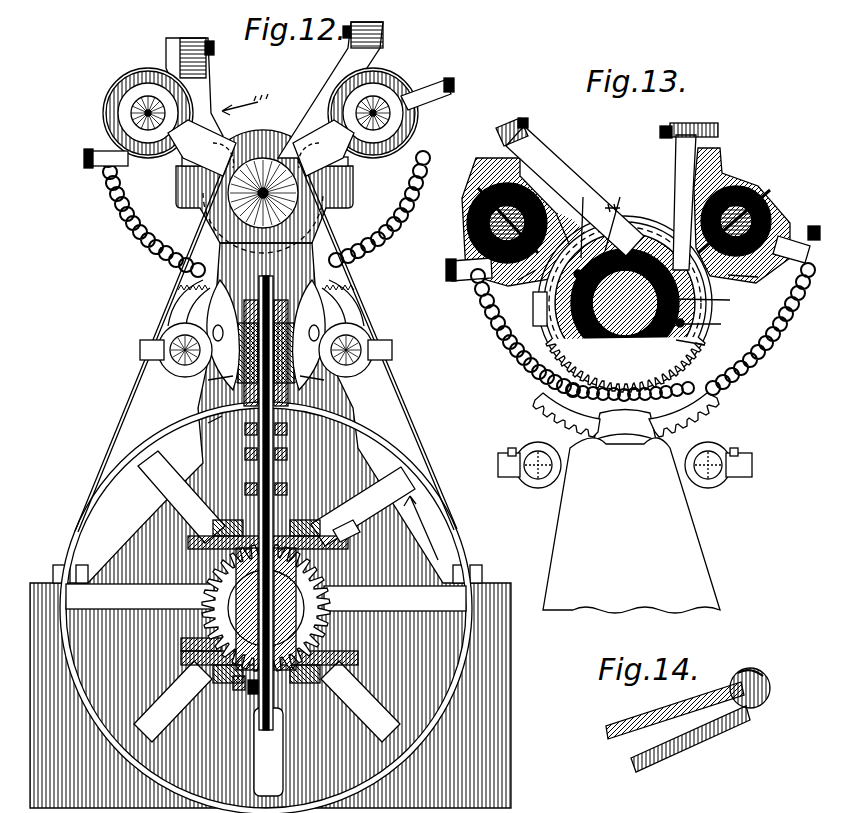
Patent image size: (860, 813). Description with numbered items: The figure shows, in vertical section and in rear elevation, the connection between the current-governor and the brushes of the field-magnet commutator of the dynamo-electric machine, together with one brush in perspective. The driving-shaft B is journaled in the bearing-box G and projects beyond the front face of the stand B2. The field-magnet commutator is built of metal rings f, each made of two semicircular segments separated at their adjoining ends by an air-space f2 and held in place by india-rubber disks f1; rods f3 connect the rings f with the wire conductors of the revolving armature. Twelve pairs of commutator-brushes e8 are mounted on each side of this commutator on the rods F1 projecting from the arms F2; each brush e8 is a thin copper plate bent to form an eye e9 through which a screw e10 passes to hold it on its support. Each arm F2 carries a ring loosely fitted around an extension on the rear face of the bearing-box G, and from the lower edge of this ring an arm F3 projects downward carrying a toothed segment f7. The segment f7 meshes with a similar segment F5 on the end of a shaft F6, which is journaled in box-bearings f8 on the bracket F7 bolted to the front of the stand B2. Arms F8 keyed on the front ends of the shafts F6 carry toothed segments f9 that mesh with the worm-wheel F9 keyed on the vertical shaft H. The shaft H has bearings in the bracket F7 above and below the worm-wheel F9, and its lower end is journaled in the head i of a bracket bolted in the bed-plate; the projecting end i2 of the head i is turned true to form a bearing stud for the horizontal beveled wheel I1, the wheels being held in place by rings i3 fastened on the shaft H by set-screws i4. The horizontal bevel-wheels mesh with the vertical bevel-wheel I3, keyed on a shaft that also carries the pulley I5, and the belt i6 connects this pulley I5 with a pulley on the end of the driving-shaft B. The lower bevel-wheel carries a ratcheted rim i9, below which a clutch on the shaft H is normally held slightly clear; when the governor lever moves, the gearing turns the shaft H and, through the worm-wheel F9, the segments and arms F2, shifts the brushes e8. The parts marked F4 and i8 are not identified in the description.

In FIG. 12, the driving-shaft B is at (264, 185).
In FIG. 13, the driving-shaft B is at (625, 303).
In FIG. 12, the stand B2 is at (270, 528).
In FIG. 13, the stand B2 is at (631, 525).
In FIG. 12, the bearing-box G is at (190, 173).
In FIG. 13, the bearing-box G is at (532, 296).
In FIG. 12, the vertical shaft H is at (260, 730).
In FIG. 12, the head of the bracket i is at (320, 175).
In FIG. 12, the projecting end of the head i2 is at (253, 678).
In FIG. 12, the rings i3 is at (240, 515).
In FIG. 12, the set-screws i4 is at (287, 515).
In FIG. 12, the belt i6 is at (114, 403).
In FIG. 12, the spoke clamp i8 is at (330, 518).
In FIG. 12, the ratcheted rim i9 is at (227, 676).
In FIG. 12, the beveled wheel I1 is at (168, 533).
In FIG. 12, the vertical bevel-wheel I3 is at (320, 593).
In FIG. 12, the pulley I5 is at (402, 468).
In FIG. 12, the rods F1 is at (227, 147).
In FIG. 13, the rods F1 is at (468, 216).
In FIG. 12, the arms F2 is at (260, 145).
In FIG. 13, the arms F2 is at (632, 278).
In FIG. 12, the arm F3 is at (299, 343).
In FIG. 12, the toothed rack F4 is at (232, 343).
In FIG. 13, the toothed rack F4 is at (530, 369).
In FIG. 12, the toothed segment F5 is at (195, 281).
In FIG. 13, the toothed segment F5 is at (690, 404).
In FIG. 12, the shaft F6 is at (176, 345).
In FIG. 13, the shaft F6 is at (529, 469).
In FIG. 12, the bracket F7 is at (140, 349).
In FIG. 13, the bracket F7 is at (502, 464).
In FIG. 12, the arms F8 is at (155, 340).
In FIG. 12, the worm-wheel F9 is at (202, 417).
In FIG. 13, the metal rings f is at (703, 318).
In FIG. 13, the india-rubber disks f1 is at (703, 294).
In FIG. 12, the air-space f2 is at (180, 644).
In FIG. 13, the air-space f2 is at (738, 360).
In FIG. 13, the rods f3 is at (576, 252).
In FIG. 12, the toothed segment f7 is at (200, 267).
In FIG. 13, the toothed segment f7 is at (600, 406).
In FIG. 13, the box-bearings f8 is at (502, 446).
In FIG. 12, the toothed segments f9 is at (216, 373).
In FIG. 12, the commutator-brushes e8 is at (196, 94).
In FIG. 13, the commutator-brushes e8 is at (532, 166).
In FIG. 14, the commutator-brushes e8 is at (680, 694).
In FIG. 12, the eye e9 is at (196, 27).
In FIG. 13, the eye e9 is at (497, 125).
In FIG. 14, the eye e9 is at (755, 674).
In FIG. 12, the screw e10 is at (202, 45).
In FIG. 13, the screw e10 is at (514, 128).